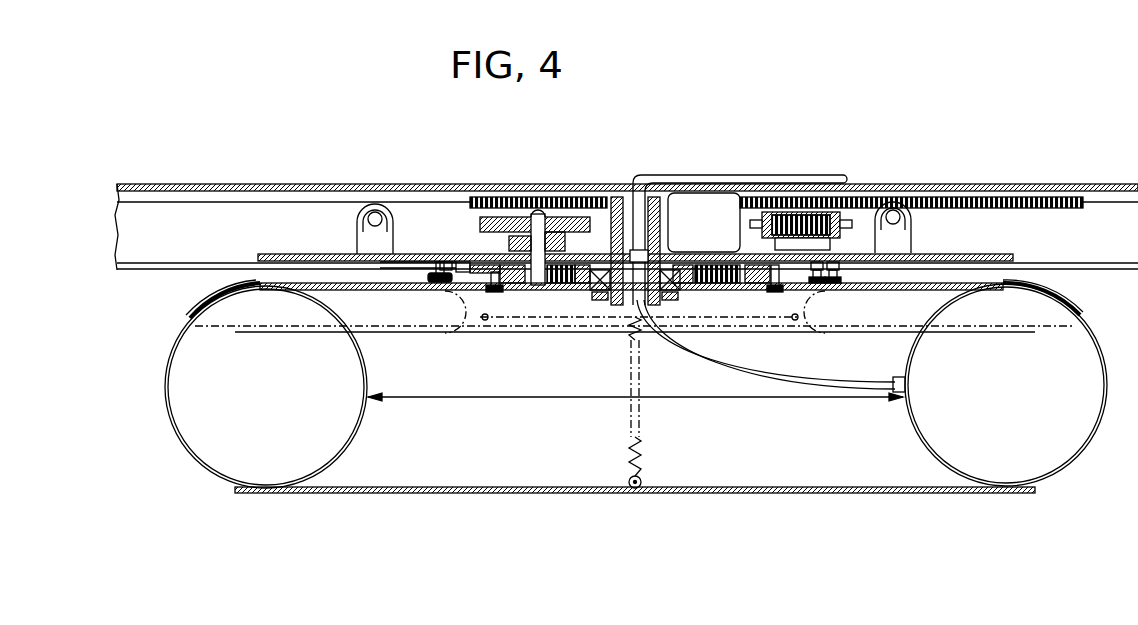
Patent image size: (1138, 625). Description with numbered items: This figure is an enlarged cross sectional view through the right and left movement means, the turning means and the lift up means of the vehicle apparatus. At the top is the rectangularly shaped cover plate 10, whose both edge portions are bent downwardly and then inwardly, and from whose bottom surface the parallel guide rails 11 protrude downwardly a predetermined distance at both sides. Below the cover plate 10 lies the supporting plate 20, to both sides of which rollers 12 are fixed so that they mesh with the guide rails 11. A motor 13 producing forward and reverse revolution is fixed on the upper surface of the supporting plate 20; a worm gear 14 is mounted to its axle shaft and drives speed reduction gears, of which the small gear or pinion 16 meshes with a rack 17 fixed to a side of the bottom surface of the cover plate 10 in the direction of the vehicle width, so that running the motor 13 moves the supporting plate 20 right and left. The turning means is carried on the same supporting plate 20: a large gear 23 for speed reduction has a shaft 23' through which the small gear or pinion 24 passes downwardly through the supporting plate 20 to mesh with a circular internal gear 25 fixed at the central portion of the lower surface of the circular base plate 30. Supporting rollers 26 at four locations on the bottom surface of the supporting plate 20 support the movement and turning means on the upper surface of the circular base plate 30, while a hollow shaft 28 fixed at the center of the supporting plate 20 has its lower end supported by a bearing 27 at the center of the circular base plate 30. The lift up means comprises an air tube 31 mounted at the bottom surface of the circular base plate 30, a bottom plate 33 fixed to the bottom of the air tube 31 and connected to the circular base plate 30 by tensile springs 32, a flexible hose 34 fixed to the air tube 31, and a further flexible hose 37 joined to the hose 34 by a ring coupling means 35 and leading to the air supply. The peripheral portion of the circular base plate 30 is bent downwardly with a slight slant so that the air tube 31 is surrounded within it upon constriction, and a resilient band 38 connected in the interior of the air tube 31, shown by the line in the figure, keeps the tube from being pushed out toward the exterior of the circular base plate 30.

The cover plate 10 is at (430, 192).
The guide rail 11 is at (265, 196).
The roller 12 is at (372, 203).
The motor 13 is at (698, 222).
The worm gear 14 is at (776, 214).
The small gear (pinion) 16 is at (806, 216).
The rack 17 is at (971, 202).
The supporting plate 20 is at (325, 256).
The large gear 23 is at (538, 158).
The shaft of the large gear 23' is at (535, 169).
The small gear (pinion) 24 is at (531, 292).
The circular internal gear 25 is at (562, 290).
The supporting roller 26 is at (438, 291).
The bearing 27 is at (596, 291).
The hollow shaft 28 is at (612, 232).
The circular base plate 30 is at (193, 300).
The air tube 31 is at (182, 447).
The tensile spring 32 is at (643, 476).
The bottom plate 33 is at (442, 494).
The flexible hose 34 is at (770, 381).
The ring coupling means 35 is at (632, 292).
The flexible hose 37 is at (760, 176).
The resilient band 38 is at (695, 399).